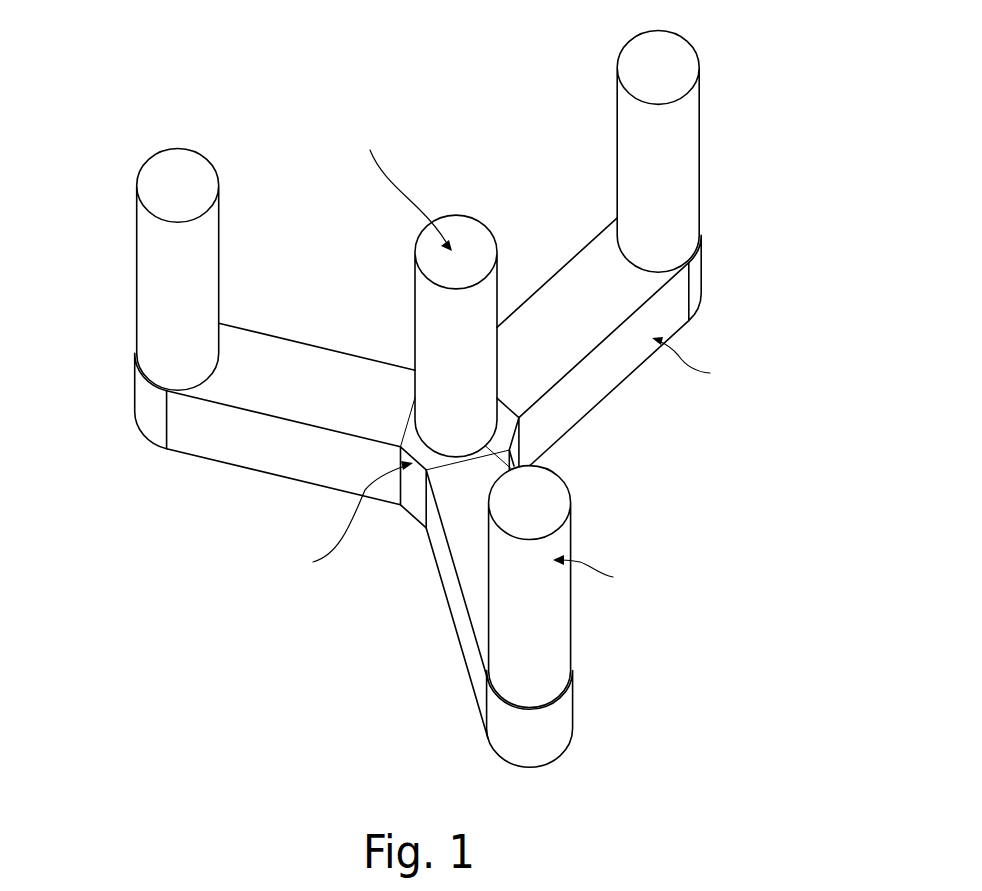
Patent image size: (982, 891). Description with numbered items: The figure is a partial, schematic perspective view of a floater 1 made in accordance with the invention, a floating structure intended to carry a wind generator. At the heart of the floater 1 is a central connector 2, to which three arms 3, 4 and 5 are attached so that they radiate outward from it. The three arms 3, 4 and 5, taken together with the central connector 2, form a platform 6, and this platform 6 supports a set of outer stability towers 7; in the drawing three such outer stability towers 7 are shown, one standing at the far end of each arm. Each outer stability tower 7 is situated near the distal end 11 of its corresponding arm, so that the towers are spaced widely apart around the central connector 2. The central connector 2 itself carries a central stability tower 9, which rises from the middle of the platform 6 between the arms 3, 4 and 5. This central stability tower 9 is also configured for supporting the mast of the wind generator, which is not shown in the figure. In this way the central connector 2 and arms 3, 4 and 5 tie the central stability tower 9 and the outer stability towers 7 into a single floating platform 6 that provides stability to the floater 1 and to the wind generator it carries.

The floater 1 is at (98, 241).
The central connector 2 is at (421, 508).
The arm 3 is at (632, 327).
The arm 4 is at (470, 662).
The arm 5 is at (242, 449).
The platform 6 is at (632, 327).
The outer stability tower 7 is at (143, 303).
The central stability tower 9 is at (427, 320).
The distal end 11 is at (703, 242).